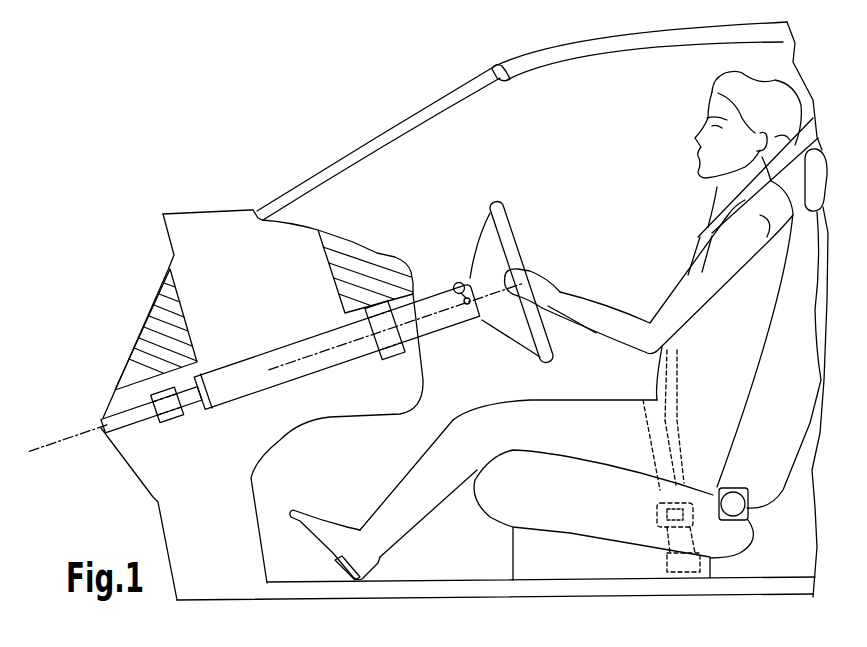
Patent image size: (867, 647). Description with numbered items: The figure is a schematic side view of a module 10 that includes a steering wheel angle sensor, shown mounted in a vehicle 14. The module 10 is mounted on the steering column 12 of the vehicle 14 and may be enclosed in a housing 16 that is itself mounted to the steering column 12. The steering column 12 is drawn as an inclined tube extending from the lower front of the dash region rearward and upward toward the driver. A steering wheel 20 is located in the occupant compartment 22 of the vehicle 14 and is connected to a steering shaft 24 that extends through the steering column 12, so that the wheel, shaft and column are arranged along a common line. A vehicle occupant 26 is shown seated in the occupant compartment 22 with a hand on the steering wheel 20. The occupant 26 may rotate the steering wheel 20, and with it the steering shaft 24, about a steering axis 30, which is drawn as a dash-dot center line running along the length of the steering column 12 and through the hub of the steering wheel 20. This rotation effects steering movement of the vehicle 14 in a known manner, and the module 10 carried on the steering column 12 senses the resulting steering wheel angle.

The module 10 is at (290, 347).
The steering column 12 is at (300, 358).
The vehicle 14 is at (441, 58).
The housing 16 is at (440, 292).
The steering wheel 20 is at (507, 238).
The occupant compartment 22 is at (441, 143).
The steering shaft 24 is at (130, 424).
The vehicle occupant 26 is at (662, 190).
The steering axis 30 is at (58, 437).